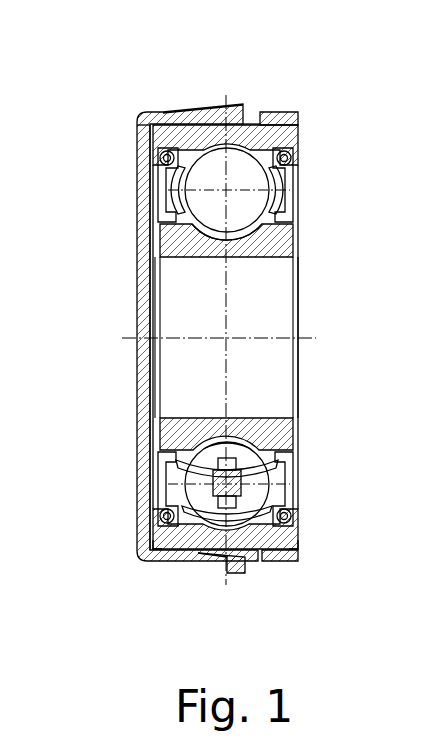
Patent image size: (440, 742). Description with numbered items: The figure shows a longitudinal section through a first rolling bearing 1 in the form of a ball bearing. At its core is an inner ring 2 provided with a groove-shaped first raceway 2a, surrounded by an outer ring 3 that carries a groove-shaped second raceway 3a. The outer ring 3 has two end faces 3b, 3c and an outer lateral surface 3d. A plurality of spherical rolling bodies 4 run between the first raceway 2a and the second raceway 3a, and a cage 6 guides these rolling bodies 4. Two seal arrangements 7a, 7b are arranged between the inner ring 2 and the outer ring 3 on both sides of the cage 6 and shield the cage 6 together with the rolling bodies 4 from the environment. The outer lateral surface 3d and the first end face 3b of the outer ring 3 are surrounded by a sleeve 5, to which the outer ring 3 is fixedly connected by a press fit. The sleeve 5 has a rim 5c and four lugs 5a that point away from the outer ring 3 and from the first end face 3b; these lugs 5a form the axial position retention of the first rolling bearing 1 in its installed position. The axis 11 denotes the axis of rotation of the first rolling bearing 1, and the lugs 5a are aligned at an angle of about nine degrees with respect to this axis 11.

The first rolling bearing 1 is at (338, 98).
The inner ring 2 is at (287, 238).
The first raceway 2a is at (238, 214).
The outer ring 3 is at (285, 138).
The second raceway 3a is at (250, 163).
The first end face 3b is at (140, 535).
The end face 3c is at (300, 535).
The outer lateral surface 3d is at (225, 572).
The spherical rolling bodies 4 is at (252, 183).
The sleeve 5 is at (152, 118).
The lugs 5a is at (232, 110).
The rim 5c is at (145, 138).
The cage 6 is at (265, 200).
The seal arrangement 7a is at (170, 190).
The seal arrangement 7b is at (288, 478).
The axis 11 is at (190, 327).